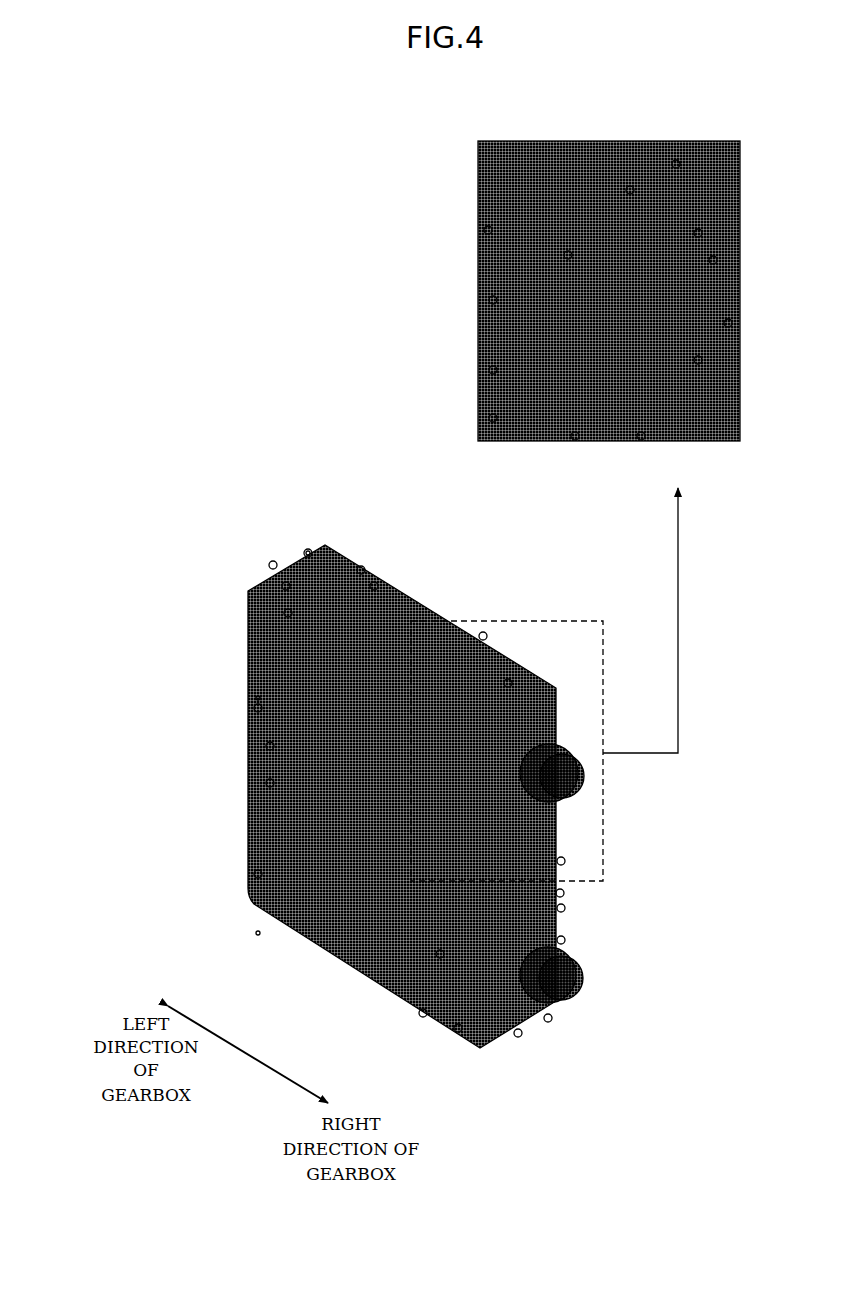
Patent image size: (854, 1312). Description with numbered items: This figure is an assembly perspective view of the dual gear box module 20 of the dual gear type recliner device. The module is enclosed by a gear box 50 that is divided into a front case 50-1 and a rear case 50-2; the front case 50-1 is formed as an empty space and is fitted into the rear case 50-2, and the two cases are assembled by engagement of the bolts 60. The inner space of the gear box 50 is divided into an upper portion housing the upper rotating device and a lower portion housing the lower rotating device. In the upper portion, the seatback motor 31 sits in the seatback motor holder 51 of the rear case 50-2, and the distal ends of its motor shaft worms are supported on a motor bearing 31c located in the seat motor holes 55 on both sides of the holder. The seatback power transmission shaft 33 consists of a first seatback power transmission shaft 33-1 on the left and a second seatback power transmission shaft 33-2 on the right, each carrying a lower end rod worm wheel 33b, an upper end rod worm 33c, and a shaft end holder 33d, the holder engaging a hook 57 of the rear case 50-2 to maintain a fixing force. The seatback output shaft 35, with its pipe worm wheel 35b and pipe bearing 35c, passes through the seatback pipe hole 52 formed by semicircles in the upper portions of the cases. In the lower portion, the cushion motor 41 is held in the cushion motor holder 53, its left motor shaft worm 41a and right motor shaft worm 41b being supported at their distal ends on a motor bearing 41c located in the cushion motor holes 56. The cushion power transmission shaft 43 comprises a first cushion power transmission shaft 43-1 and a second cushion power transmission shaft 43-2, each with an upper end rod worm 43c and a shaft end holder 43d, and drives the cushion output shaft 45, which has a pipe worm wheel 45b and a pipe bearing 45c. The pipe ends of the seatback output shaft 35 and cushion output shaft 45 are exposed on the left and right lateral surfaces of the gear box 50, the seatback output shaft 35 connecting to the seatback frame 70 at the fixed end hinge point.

The dual gear box module 20 is at (291, 400).
The seatback motor 31 is at (485, 292).
The motor bearing 31c is at (633, 433).
The seatback power transmission shaft 33 is at (135, 640).
The first seatback power transmission shaft 33-1 is at (250, 700).
The second seatback power transmission shaft 33-2 is at (262, 738).
The lower end rod worm wheel 33b is at (567, 430).
The upper end rod worm 33c is at (560, 245).
The shaft end holder 33d is at (280, 605).
The seatback output shaft 35 is at (575, 762).
The right pipe worm wheel 35b is at (622, 180).
The pipe bearing 35c is at (690, 225).
The cushion motor 41 is at (485, 410).
The left motor shaft worm 41a is at (262, 775).
The right motor shaft worm 41b is at (553, 853).
The motor bearing 41c is at (553, 932).
The cushion power transmission shaft 43 is at (138, 880).
The first cushion power transmission shaft 43-1 is at (250, 866).
The second cushion power transmission shaft 43-2 is at (432, 946).
The upper end rod worm 43c is at (552, 885).
The shaft end holder 43d is at (415, 1005).
The cushion output shaft 45 is at (571, 983).
The right pipe worm wheel 45b is at (510, 1025).
The pipe bearing 45c is at (540, 1010).
The gear box 50 is at (200, 442).
The front case 50-1 is at (265, 557).
The rear case 50-2 is at (668, 155).
The seatback motor holder 51 is at (480, 222).
The seatback pipe hole 52 is at (705, 252).
The cushion motor holder 53 is at (485, 362).
The seat motor hole 55 is at (690, 352).
The cushion motor hole 56 is at (553, 900).
The hook 57 is at (278, 578).
The bolts 60 is at (475, 628).
The seatback frame 70 is at (720, 315).